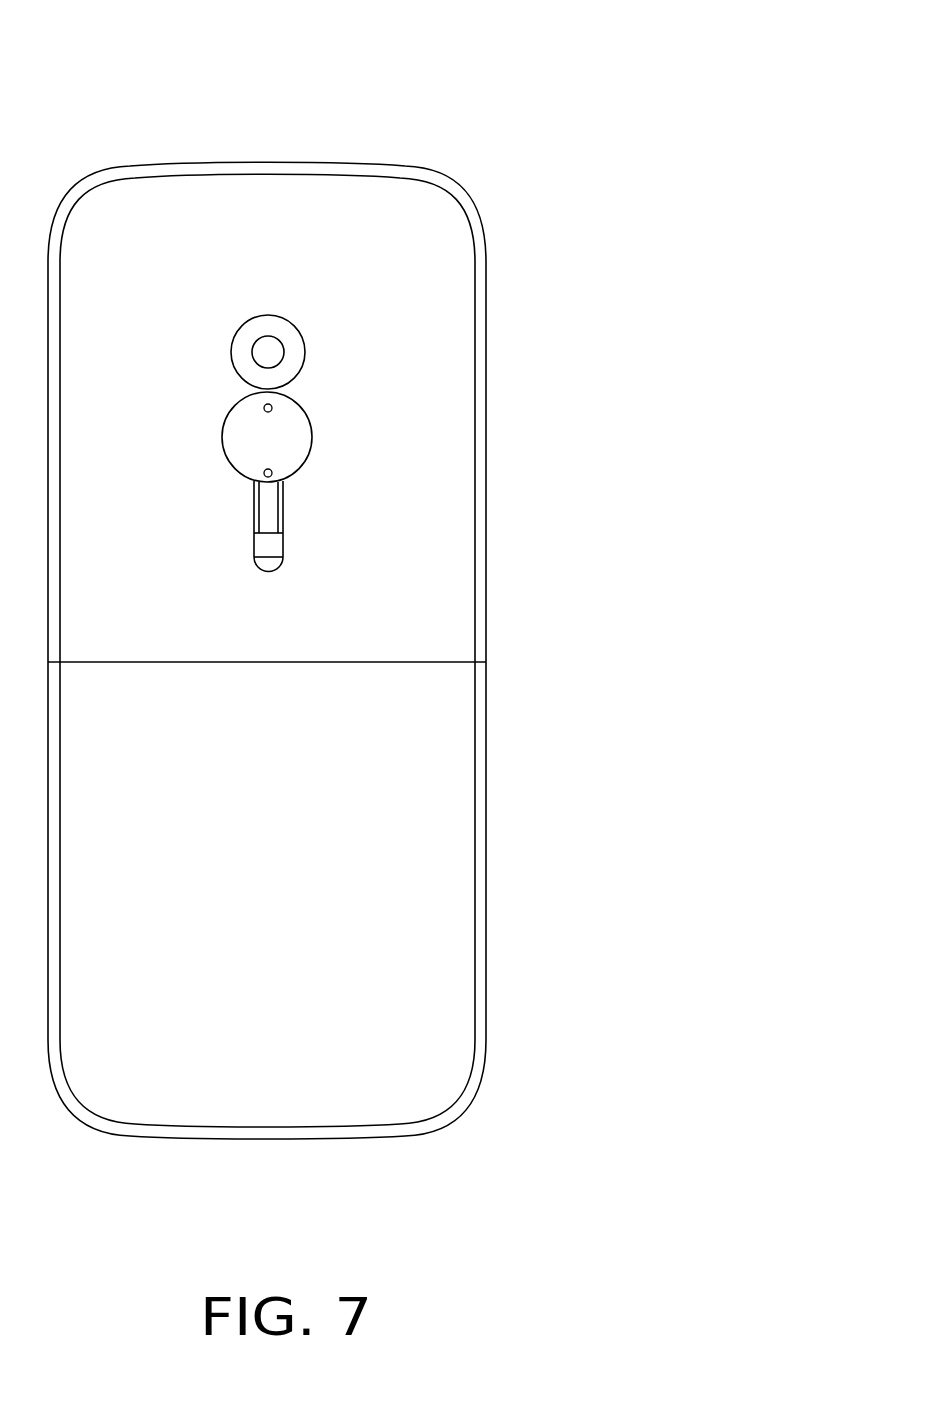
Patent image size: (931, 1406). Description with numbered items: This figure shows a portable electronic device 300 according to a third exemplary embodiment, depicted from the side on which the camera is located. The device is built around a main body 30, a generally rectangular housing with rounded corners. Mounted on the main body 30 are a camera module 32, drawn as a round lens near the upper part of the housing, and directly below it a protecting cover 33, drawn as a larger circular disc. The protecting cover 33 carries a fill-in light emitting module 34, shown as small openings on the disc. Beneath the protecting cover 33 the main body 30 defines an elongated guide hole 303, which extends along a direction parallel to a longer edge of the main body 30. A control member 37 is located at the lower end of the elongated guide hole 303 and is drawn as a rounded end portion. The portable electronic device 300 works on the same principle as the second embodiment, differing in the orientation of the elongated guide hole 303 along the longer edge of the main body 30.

The portable electronic device 300 is at (320, 573).
The main body 30 is at (445, 640).
The camera module 32 is at (273, 350).
The protecting cover 33 is at (310, 425).
The fill-in light emitting module 34 is at (271, 405).
The elongated guide hole 303 is at (280, 510).
The control member 37 is at (270, 547).